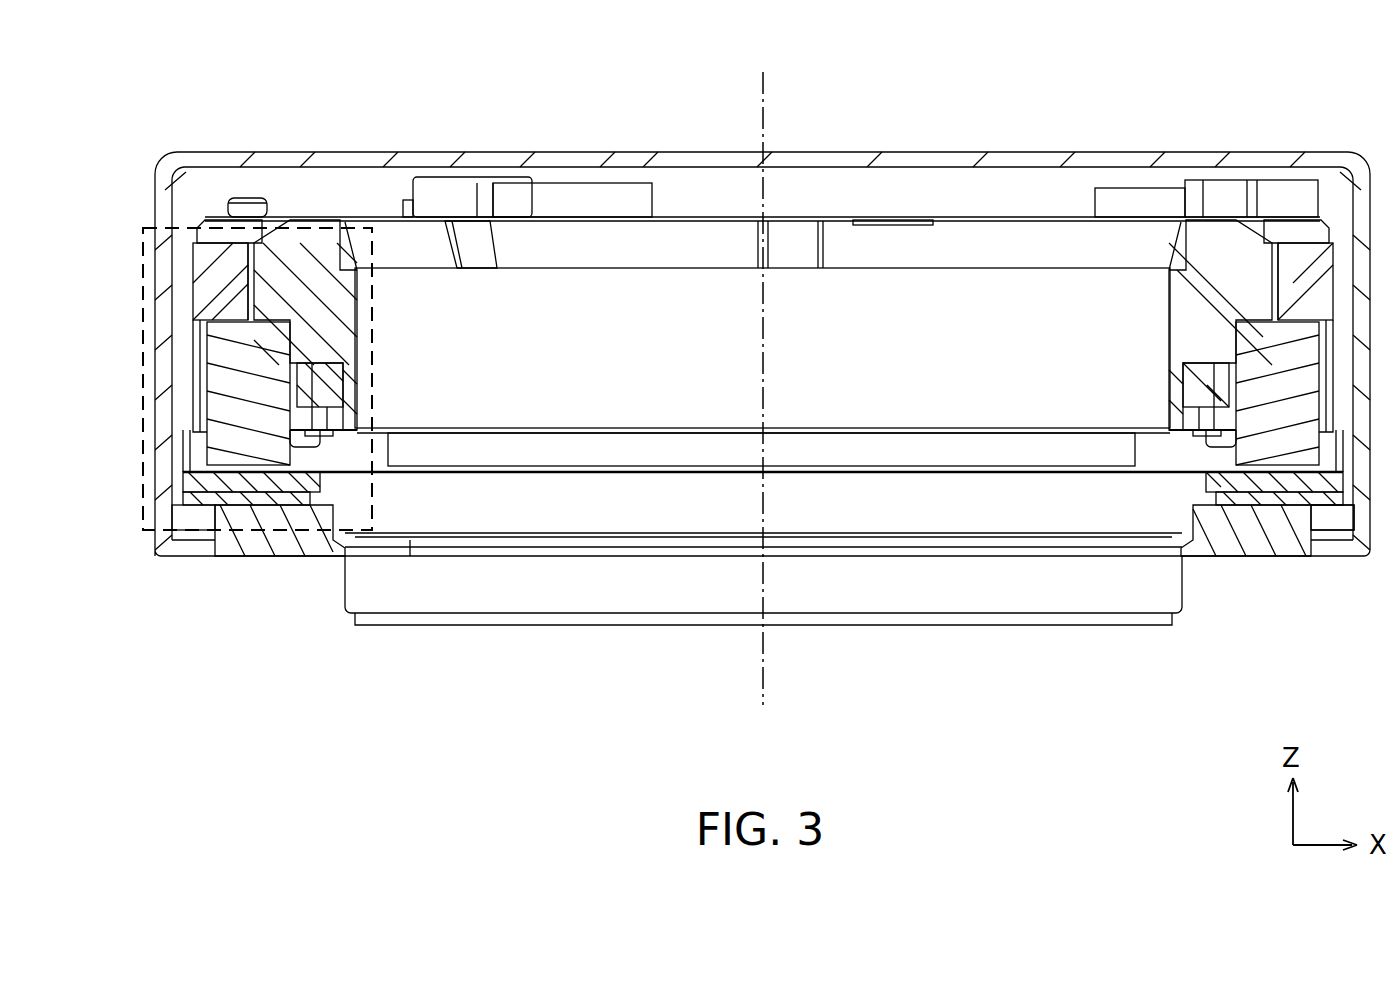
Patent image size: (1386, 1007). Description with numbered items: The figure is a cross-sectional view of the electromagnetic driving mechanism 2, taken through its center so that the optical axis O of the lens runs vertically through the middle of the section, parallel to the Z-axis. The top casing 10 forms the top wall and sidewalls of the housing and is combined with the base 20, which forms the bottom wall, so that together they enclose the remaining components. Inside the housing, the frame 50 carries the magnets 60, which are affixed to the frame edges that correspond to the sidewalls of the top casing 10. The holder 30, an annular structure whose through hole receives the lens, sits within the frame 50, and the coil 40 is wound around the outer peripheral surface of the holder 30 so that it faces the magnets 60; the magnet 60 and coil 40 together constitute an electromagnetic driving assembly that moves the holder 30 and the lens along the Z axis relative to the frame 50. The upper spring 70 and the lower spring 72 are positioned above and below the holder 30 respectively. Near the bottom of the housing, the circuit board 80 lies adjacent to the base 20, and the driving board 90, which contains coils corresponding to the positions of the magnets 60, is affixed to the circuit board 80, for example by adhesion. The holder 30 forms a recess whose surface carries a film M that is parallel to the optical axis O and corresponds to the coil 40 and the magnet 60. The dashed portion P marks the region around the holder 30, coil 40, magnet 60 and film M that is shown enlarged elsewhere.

The electromagnetic driving mechanism 2 is at (548, 152).
The top casing 10 is at (1275, 155).
The base 20 is at (270, 540).
The holder 30 is at (312, 265).
The coil 40 is at (318, 440).
The frame 50 is at (220, 272).
The magnet 60 is at (250, 383).
The upper spring 70 is at (953, 216).
The lower spring 72 is at (960, 435).
The circuit board 80 is at (196, 530).
The driving board 90 is at (1322, 505).
The film M is at (323, 390).
The optical axis O is at (763, 372).
The portion P is at (143, 395).